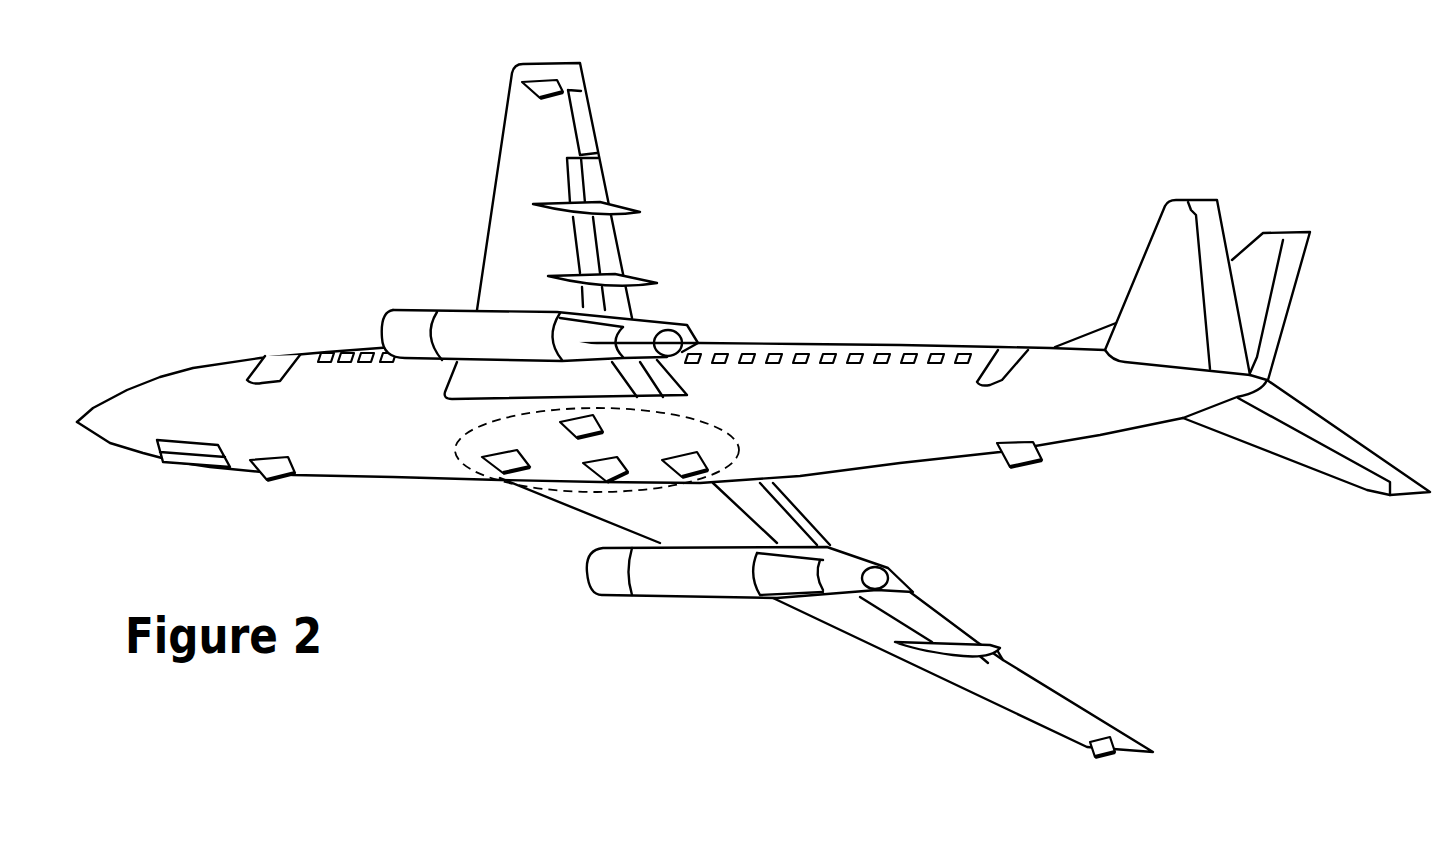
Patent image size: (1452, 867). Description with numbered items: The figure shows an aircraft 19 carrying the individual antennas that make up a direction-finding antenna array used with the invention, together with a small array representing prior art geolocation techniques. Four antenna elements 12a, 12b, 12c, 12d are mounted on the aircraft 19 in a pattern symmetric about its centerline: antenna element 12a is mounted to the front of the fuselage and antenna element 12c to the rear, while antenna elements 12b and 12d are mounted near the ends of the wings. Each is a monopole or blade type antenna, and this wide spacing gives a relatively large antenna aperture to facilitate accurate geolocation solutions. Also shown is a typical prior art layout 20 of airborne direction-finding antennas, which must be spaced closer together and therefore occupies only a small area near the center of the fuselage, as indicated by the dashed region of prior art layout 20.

The antenna element 12a is at (267, 483).
The antenna element 12b is at (523, 98).
The antenna element 12c is at (1028, 467).
The antenna element 12d is at (1088, 757).
The aircraft 19 is at (893, 332).
The prior art layout of airborne DF antennas 20 is at (462, 465).